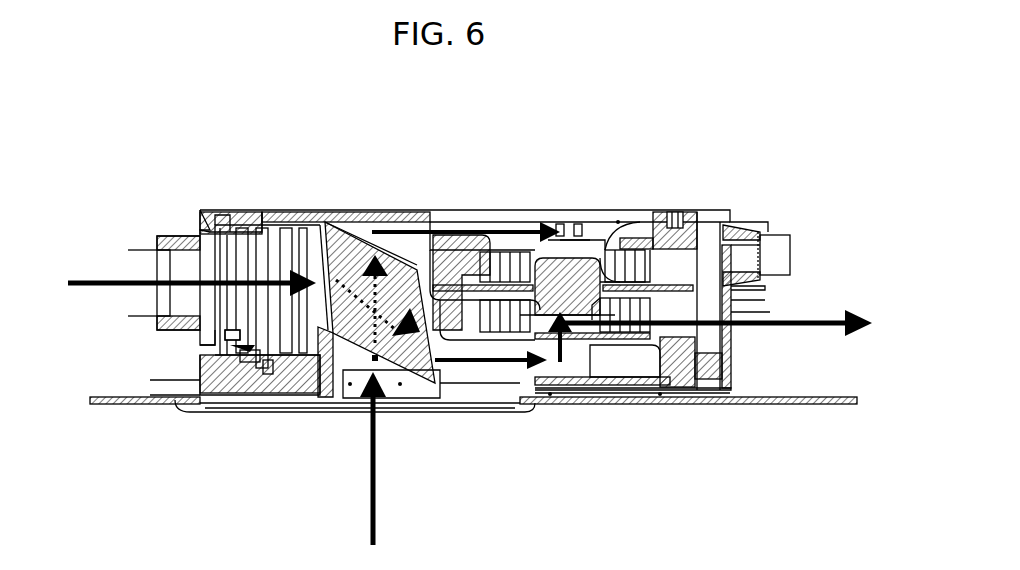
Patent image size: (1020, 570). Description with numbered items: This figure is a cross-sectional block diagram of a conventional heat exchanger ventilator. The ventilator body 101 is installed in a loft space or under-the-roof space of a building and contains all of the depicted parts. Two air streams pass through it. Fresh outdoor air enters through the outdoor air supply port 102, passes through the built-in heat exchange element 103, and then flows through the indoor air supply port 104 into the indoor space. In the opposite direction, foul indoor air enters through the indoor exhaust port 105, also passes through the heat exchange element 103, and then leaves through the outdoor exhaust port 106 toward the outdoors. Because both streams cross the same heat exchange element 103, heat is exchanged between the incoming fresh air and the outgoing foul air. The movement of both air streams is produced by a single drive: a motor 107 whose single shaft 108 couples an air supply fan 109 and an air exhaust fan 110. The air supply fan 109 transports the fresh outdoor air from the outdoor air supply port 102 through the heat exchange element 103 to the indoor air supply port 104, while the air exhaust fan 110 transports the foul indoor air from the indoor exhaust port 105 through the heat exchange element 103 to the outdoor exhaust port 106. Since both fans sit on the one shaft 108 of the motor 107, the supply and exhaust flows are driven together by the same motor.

The ventilator body 101 is at (462, 210).
The outdoor air supply port 102 is at (180, 262).
The heat exchange element 103 is at (347, 254).
The indoor air supply port 104 is at (762, 308).
The indoor exhaust port 105 is at (343, 400).
The outdoor exhaust port 106 is at (166, 218).
The motor 107 is at (572, 280).
The single shaft 108 is at (560, 347).
The air supply fan 109 is at (631, 252).
The air exhaust fan 110 is at (630, 313).